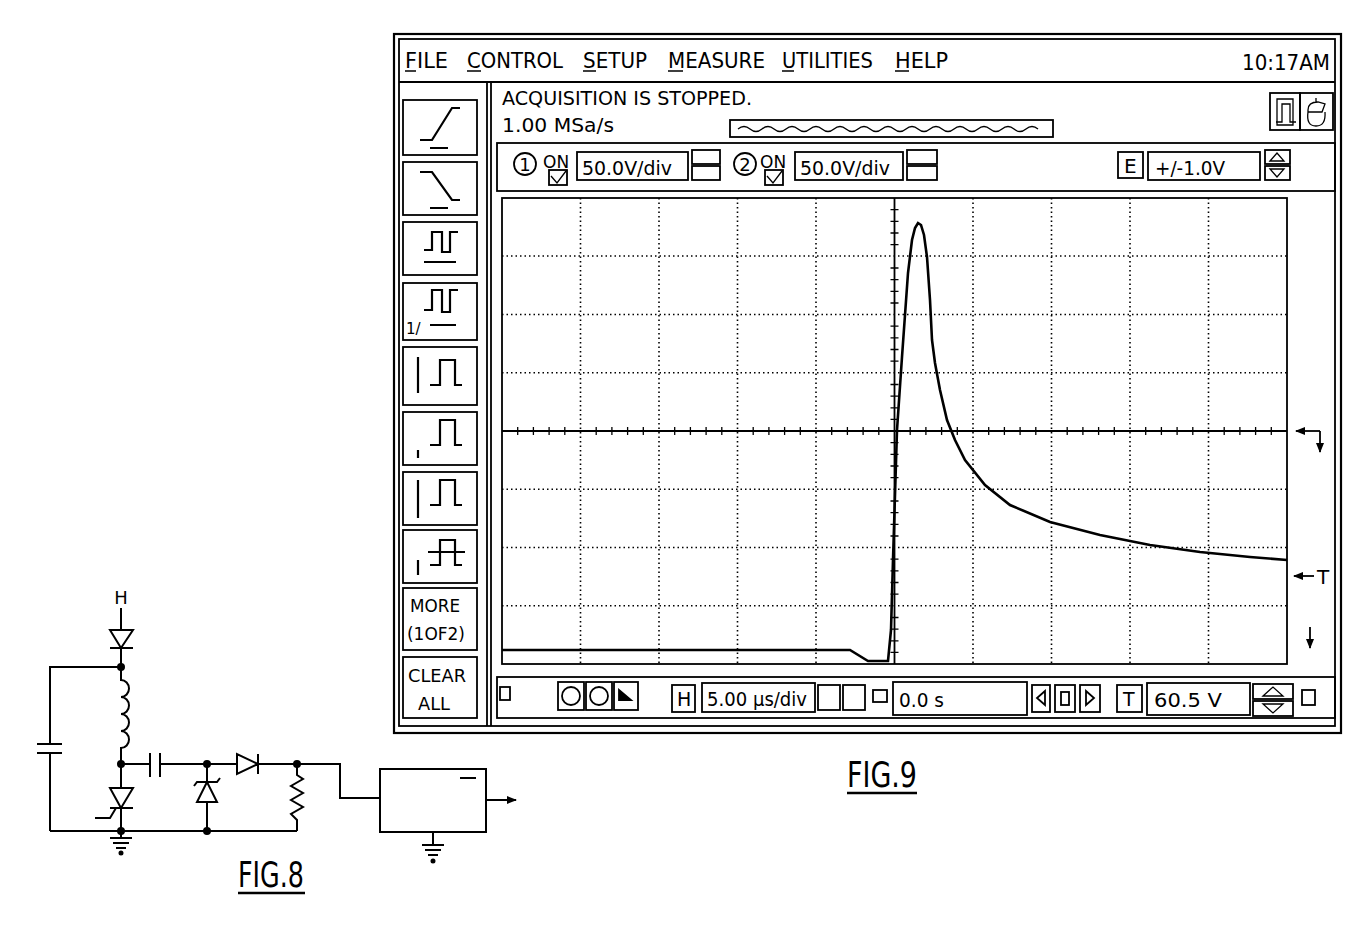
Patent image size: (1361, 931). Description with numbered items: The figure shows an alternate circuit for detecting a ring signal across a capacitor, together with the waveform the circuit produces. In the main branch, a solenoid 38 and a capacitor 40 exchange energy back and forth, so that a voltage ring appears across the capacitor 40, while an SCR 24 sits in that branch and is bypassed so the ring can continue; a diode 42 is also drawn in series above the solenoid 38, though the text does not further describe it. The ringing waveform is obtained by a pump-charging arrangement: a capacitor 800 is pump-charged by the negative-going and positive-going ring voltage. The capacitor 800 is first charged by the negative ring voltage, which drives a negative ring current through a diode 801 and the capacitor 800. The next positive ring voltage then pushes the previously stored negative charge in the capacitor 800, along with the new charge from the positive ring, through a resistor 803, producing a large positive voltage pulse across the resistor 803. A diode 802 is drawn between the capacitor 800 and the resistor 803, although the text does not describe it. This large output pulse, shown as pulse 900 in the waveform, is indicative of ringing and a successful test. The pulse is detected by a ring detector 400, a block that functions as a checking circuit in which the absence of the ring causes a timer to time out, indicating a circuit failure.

In FIG. 8, the SCR 24 is at (133, 797).
In FIG. 8, the solenoid 38 is at (118, 726).
In FIG. 8, the capacitor 40 is at (62, 755).
In FIG. 8, the diode 42 is at (133, 640).
In FIG. 8, the ring detector block 400 is at (486, 820).
In FIG. 8, the capacitor 800 is at (162, 752).
In FIG. 8, the diode 801 is at (218, 790).
In FIG. 8, the diode 802 is at (249, 756).
In FIG. 8, the resistor 803 is at (303, 812).
In FIG. 9, the positive pulse 900 is at (947, 417).